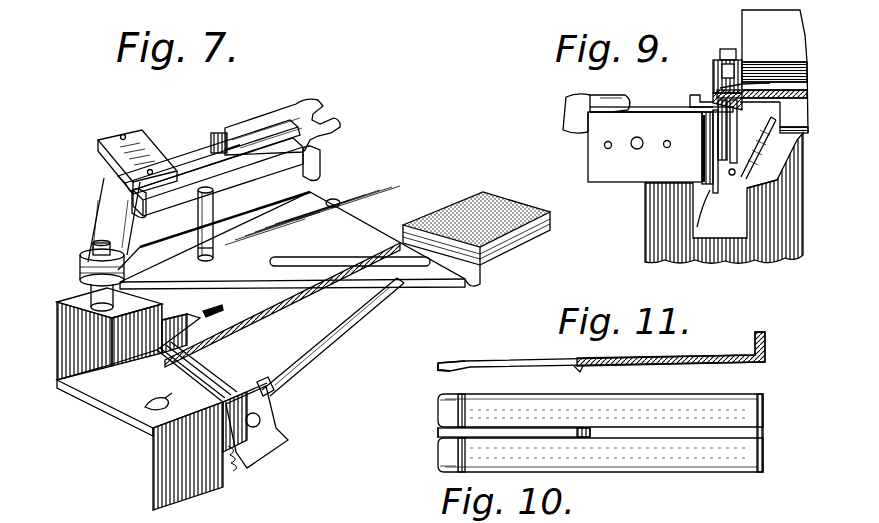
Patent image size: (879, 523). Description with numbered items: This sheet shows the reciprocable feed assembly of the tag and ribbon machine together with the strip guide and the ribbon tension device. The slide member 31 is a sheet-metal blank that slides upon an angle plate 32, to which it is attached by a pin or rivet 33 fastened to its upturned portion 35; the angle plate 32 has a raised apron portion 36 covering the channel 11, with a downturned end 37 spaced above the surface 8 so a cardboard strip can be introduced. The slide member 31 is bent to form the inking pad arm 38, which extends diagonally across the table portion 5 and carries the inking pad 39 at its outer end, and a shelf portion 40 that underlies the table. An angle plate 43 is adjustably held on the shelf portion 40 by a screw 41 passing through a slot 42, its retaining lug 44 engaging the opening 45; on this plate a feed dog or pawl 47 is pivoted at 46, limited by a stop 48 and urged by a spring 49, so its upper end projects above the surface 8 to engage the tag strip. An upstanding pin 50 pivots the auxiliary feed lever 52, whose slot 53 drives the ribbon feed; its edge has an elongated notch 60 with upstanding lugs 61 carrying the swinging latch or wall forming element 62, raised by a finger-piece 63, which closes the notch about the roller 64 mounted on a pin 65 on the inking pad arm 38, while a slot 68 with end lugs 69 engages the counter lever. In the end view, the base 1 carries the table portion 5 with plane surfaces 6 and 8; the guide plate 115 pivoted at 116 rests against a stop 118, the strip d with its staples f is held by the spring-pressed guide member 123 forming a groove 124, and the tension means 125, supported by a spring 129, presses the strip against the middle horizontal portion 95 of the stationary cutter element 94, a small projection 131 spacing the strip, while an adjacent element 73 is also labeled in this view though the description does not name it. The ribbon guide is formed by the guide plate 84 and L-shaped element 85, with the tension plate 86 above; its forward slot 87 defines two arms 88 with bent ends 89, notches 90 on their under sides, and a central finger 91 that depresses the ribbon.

In FIG. 9, the base 1 is at (748, 258).
In FIG. 9, the table portion 5 is at (800, 116).
In FIG. 9, the plane surface 6 is at (808, 102).
In FIG. 9, the plane surface 8 is at (672, 113).
In FIG. 9, the channel 11 is at (775, 154).
In FIG. 7, the slide member 31 is at (178, 254).
In FIG. 7, the angle plate 32 is at (57, 324).
In FIG. 7, the pin or rivet 33 is at (137, 335).
In FIG. 7, the upturned portion 35 is at (138, 352).
In FIG. 7, the raised apron portion 36 is at (287, 300).
In FIG. 7, the downturned end 37 is at (256, 311).
In FIG. 9, the downturned end 37 is at (700, 95).
In FIG. 7, the inking pad arm 38 is at (257, 276).
In FIG. 7, the inking pad 39 is at (480, 205).
In FIG. 7, the shelf portion 40 is at (90, 390).
In FIG. 7, the screw 41 is at (160, 398).
In FIG. 7, the slot 42 is at (143, 426).
In FIG. 7, the angle plate 43 is at (150, 440).
In FIG. 7, the retaining lug 44 is at (224, 350).
In FIG. 7, the opening 45 is at (236, 366).
In FIG. 7, the pivot 46 is at (261, 422).
In FIG. 7, the feed dog or pawl 47 is at (322, 352).
In FIG. 9, the feed dog or pawl 47 is at (704, 155).
In FIG. 7, the stop 48 is at (282, 388).
In FIG. 7, the spring 49 is at (240, 465).
In FIG. 7, the upstanding pin 50 is at (112, 300).
In FIG. 7, the auxiliary feed lever 52 is at (99, 205).
In FIG. 7, the slot 53 is at (326, 112).
In FIG. 7, the elongated notch 60 is at (283, 180).
In FIG. 7, the upstanding lugs 61 is at (322, 170).
In FIG. 7, the swinging latch or wall forming element 62 is at (178, 160).
In FIG. 7, the finger-piece 63 is at (133, 130).
In FIG. 7, the roller 64 is at (214, 205).
In FIG. 7, the pin 65 is at (214, 249).
In FIG. 7, the slot 68 is at (226, 152).
In FIG. 7, the end lugs 69 is at (221, 133).
In FIG. 9, the band 73 is at (807, 90).
In FIG. 9, the guide plate 84 is at (728, 71).
In FIG. 9, the L-shaped element 85 is at (774, 36).
In FIG. 9, the tension plate 86 is at (787, 68).
In FIG. 11, the tension plate 86 is at (648, 365).
In FIG. 10, the tension plate 86 is at (658, 462).
In FIG. 9, the slot 87 is at (810, 64).
In FIG. 11, the slot 87 is at (525, 360).
In FIG. 10, the slot 87 is at (517, 430).
In FIG. 11, the arms 88 is at (493, 359).
In FIG. 10, the arms 88 is at (507, 399).
In FIG. 11, the bent ends 89 is at (452, 361).
In FIG. 10, the bent ends 89 is at (462, 396).
In FIG. 10, the notches 90 is at (441, 445).
In FIG. 11, the central finger 91 is at (576, 369).
In FIG. 10, the central finger 91 is at (588, 428).
In FIG. 9, the stationary cutter element 94 is at (713, 60).
In FIG. 9, the middle horizontal portion 95 is at (703, 140).
In FIG. 9, the guide plate 115 is at (735, 182).
In FIG. 9, the pivot 116 is at (731, 175).
In FIG. 7, the stop 118 is at (214, 306).
In FIG. 9, the guide member 123 is at (598, 97).
In FIG. 9, the groove 124 is at (598, 122).
In FIG. 9, the tension means 125 is at (705, 212).
In FIG. 9, the spring 129 is at (716, 194).
In FIG. 9, the projection 131 is at (712, 92).
In FIG. 9, the ticket strip d is at (660, 107).
In FIG. 9, the staples f is at (738, 128).